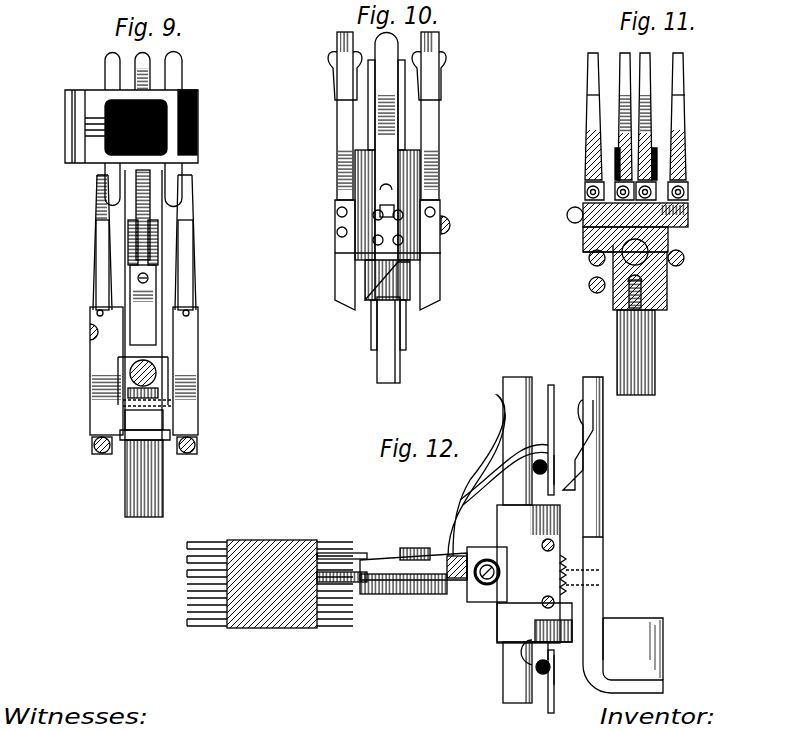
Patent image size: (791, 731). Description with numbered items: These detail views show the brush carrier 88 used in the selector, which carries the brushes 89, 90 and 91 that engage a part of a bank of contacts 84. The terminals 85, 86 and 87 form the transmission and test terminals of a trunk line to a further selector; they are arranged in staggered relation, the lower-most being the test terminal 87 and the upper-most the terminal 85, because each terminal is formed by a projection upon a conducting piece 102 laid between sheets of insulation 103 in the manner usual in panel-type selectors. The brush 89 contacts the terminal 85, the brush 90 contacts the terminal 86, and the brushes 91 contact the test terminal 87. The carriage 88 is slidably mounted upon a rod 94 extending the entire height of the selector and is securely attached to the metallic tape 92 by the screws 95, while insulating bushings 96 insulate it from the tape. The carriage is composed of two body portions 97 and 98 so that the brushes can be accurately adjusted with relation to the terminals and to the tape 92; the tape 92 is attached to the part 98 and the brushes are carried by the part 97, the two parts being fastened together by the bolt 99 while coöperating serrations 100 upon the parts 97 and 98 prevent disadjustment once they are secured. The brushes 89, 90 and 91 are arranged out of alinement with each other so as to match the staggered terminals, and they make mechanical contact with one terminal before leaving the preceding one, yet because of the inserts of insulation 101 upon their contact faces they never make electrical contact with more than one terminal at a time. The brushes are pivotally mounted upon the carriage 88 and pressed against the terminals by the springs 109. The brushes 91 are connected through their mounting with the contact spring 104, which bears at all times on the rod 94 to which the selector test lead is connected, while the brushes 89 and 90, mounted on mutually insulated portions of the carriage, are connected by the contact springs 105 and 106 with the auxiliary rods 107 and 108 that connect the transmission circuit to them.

In FIG. 9, the bank of contacts 84 is at (138, 129).
In FIG. 12, the bank of contacts 84 is at (350, 600).
In FIG. 9, the transmission terminal 85 is at (108, 190).
In FIG. 10, the transmission terminal 85 is at (446, 228).
In FIG. 12, the transmission terminal 85 is at (197, 568).
In FIG. 9, the transmission terminal 86 is at (173, 177).
In FIG. 10, the transmission terminal 86 is at (337, 212).
In FIG. 12, the transmission terminal 86 is at (197, 578).
In FIG. 9, the test terminal 87 is at (150, 188).
In FIG. 10, the test terminal 87 is at (388, 242).
In FIG. 12, the test terminal 87 is at (197, 588).
In FIG. 9, the brush carrier 88 is at (177, 365).
In FIG. 11, the brush carrier 88 is at (643, 256).
In FIG. 12, the brush carrier 88 is at (509, 655).
In FIG. 9, the brush 89 is at (100, 228).
In FIG. 11, the brush 89 is at (595, 112).
In FIG. 12, the brush 89 is at (412, 556).
In FIG. 9, the brush 90 is at (185, 225).
In FIG. 11, the brush 90 is at (678, 108).
In FIG. 9, the test brush 91 is at (130, 250).
In FIG. 11, the test brush 91 is at (625, 118).
In FIG. 12, the test brush 91 is at (405, 588).
In FIG. 9, the metallic tape 92 is at (130, 402).
In FIG. 10, the metallic tape 92 is at (402, 358).
In FIG. 12, the metallic tape 92 is at (512, 707).
In FIG. 9, the rod 94 is at (135, 372).
In FIG. 10, the rod 94 is at (382, 371).
In FIG. 11, the rod 94 is at (583, 250).
In FIG. 12, the rod 94 is at (515, 683).
In FIG. 9, the screw 95 is at (150, 392).
In FIG. 12, the screw 95 is at (538, 570).
In FIG. 9, the insulating bushing 96 is at (168, 414).
In FIG. 10, the insulating bushing 96 is at (405, 328).
In FIG. 12, the insulating bushing 96 is at (548, 570).
In FIG. 12, the body portion 97 is at (528, 574).
In FIG. 12, the body portion 98 is at (577, 611).
In FIG. 11, the bolt 99 is at (655, 333).
In FIG. 12, the bolt 99 is at (580, 575).
In FIG. 12, the serrations 100 is at (550, 611).
In FIG. 10, the insert of insulation 101 is at (337, 236).
In FIG. 12, the insert of insulation 101 is at (366, 557).
In FIG. 9, the conducting piece 102 is at (99, 95).
In FIG. 9, the sheet of insulation 103 is at (73, 108).
In FIG. 9, the contact spring 104 is at (150, 337).
In FIG. 10, the contact spring 104 is at (388, 158).
In FIG. 12, the contact spring 104 is at (470, 488).
In FIG. 9, the contact spring 105 is at (100, 395).
In FIG. 10, the contact spring 105 is at (436, 165).
In FIG. 11, the contact spring 105 is at (590, 262).
In FIG. 9, the contact spring 106 is at (188, 395).
In FIG. 10, the contact spring 106 is at (345, 172).
In FIG. 11, the contact spring 106 is at (683, 255).
In FIG. 12, the contact spring 106 is at (590, 425).
In FIG. 9, the auxiliary rod 107 is at (102, 450).
In FIG. 10, the auxiliary rod 107 is at (440, 44).
In FIG. 9, the auxiliary rod 108 is at (187, 450).
In FIG. 10, the auxiliary rod 108 is at (340, 44).
In FIG. 12, the auxiliary rod 108 is at (600, 485).
In FIG. 11, the spring 109 is at (590, 192).
In FIG. 12, the spring 109 is at (472, 578).